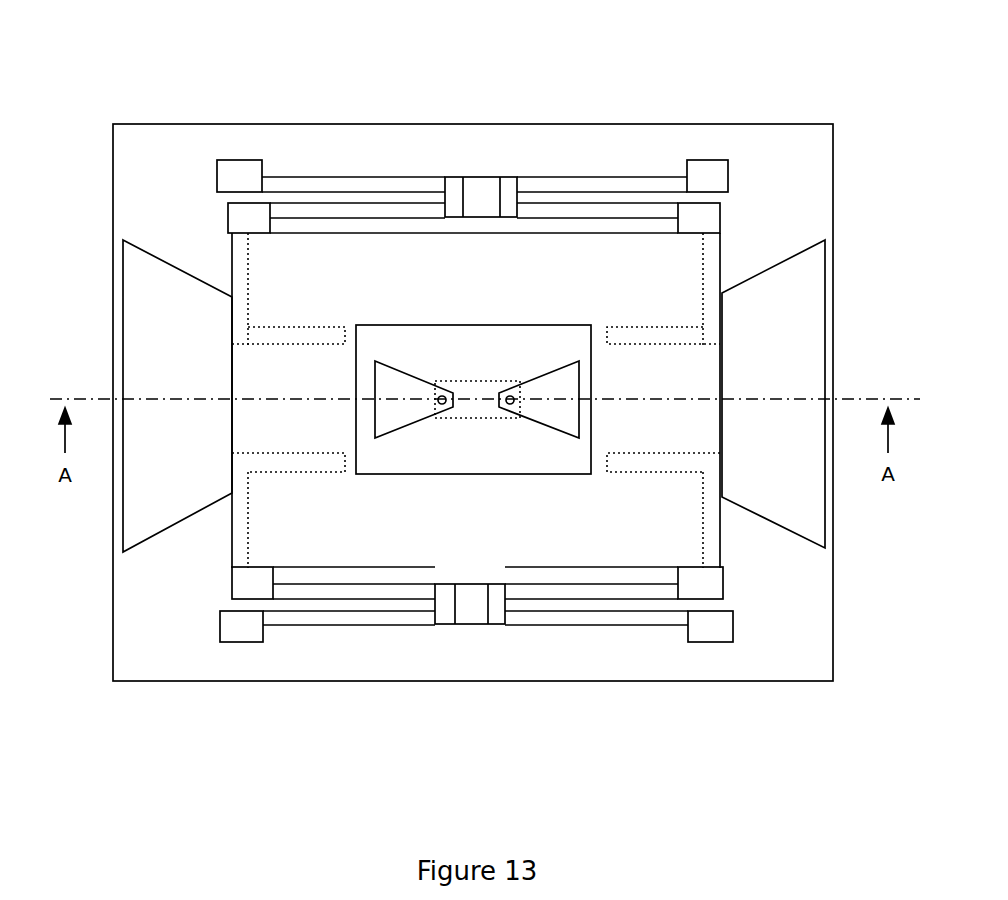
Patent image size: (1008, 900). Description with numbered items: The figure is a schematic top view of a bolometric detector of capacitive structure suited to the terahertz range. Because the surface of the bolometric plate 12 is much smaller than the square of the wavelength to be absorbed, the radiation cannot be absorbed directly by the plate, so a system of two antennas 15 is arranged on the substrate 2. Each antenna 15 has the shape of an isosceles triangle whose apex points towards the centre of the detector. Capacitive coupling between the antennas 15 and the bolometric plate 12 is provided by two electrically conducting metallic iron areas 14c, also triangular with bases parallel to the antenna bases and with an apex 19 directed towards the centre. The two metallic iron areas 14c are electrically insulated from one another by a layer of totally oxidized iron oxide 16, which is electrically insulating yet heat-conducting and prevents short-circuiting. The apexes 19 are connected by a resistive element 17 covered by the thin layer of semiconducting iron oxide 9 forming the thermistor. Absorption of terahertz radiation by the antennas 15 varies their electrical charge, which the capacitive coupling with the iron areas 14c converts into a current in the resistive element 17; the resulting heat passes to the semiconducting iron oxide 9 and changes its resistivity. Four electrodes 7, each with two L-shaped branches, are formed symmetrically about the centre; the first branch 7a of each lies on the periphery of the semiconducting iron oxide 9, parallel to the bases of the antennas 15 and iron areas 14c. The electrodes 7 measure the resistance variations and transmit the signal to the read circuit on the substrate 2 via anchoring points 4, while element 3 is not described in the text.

The substrate 2 is at (420, 143).
The lower suspension beam assembly 3 is at (375, 622).
The anchoring points 4 is at (255, 587).
The electrodes 7 is at (290, 467).
The first branch 7a is at (238, 546).
The thin layer of semiconducting iron oxide 9 is at (533, 277).
The bolometric plate 12 is at (330, 266).
The metallic iron areas 14c is at (563, 383).
The antennas 15 is at (773, 297).
The layer of totally oxidized iron oxide 16 is at (480, 433).
The resistive element 17 is at (467, 390).
The apexes 19 is at (512, 402).